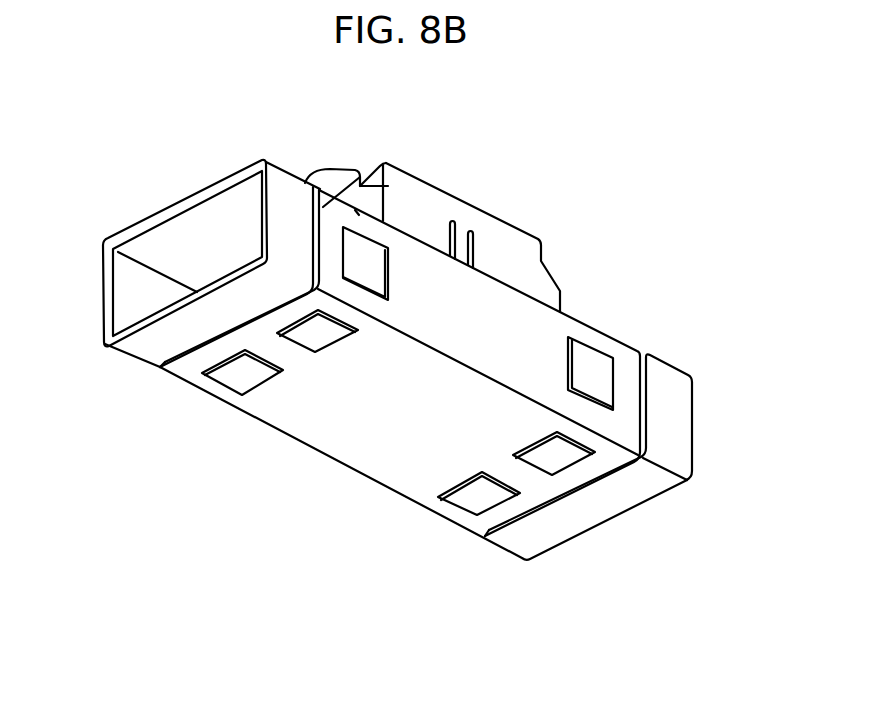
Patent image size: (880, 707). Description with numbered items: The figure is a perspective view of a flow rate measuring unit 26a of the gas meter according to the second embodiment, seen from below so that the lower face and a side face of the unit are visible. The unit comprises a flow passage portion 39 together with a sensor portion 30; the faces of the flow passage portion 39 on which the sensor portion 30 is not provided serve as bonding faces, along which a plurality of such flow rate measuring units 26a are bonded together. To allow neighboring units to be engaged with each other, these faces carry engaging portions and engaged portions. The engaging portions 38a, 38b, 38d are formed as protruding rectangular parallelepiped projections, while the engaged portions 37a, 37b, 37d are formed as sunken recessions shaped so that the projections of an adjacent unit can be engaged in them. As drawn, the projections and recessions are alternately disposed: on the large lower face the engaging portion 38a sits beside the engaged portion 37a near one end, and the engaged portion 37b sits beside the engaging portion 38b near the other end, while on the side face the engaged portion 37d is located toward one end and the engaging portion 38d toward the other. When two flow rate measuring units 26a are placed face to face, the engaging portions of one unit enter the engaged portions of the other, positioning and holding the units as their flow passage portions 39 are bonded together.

The flow rate measuring unit 26a is at (517, 213).
The sensor portion 30 is at (432, 213).
The engaged portion 37a is at (323, 327).
The engaged portion 37b is at (473, 497).
The engaged portion 37d is at (367, 267).
The engaging portion 38a is at (232, 375).
The engaging portion 38b is at (560, 453).
The engaging portion 38d is at (588, 375).
The flow passage portion 39 is at (407, 430).